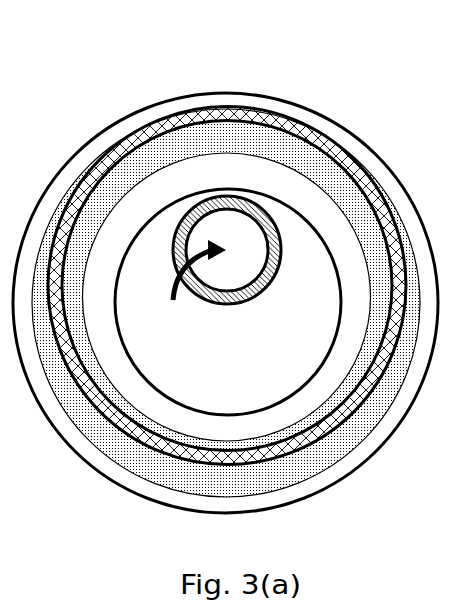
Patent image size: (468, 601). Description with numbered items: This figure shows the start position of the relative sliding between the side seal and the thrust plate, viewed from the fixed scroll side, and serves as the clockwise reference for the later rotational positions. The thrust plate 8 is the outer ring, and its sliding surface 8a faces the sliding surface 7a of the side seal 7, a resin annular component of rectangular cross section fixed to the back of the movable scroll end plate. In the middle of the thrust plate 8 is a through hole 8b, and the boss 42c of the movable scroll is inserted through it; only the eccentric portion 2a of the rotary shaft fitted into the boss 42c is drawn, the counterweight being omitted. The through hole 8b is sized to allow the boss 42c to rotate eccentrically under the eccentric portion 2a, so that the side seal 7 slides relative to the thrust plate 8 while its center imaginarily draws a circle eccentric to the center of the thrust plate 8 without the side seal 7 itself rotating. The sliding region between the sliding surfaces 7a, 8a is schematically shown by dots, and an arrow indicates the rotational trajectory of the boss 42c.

The thrust plate 8 is at (186, 86).
The sliding surface of the thrust plate 8a is at (220, 100).
The through hole 8b is at (135, 362).
The side seal 7 is at (284, 102).
The sliding surface of the side seal 7a is at (334, 153).
The eccentric portion 2a is at (216, 272).
The boss 42c is at (278, 268).